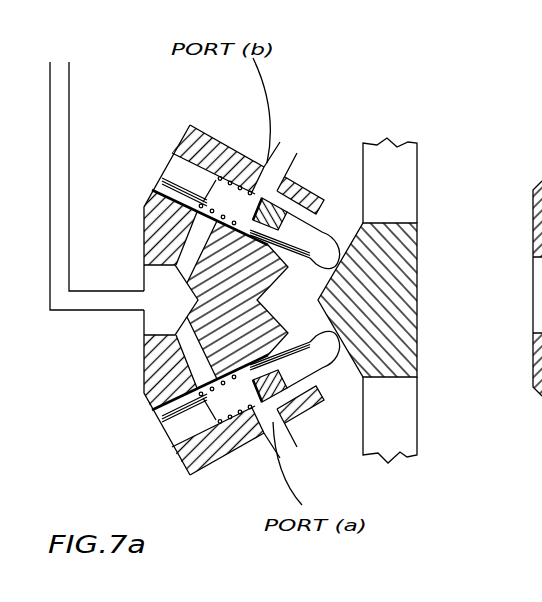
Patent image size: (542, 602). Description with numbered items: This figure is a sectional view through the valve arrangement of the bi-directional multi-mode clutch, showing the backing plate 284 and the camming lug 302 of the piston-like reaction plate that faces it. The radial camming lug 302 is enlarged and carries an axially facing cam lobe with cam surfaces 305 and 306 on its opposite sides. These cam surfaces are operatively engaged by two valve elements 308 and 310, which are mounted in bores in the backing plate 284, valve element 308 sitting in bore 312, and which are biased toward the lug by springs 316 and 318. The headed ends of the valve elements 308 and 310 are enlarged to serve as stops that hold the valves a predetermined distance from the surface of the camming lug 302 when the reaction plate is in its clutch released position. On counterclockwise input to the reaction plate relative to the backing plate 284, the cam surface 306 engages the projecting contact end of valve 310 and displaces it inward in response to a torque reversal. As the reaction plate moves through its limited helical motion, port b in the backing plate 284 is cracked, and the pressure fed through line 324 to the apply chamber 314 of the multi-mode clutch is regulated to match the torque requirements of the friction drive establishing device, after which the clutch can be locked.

The backing plate 284 is at (145, 370).
The radial camming lug 302 is at (413, 225).
The cam surface 305 is at (346, 372).
The cam surface 306 is at (346, 230).
The valve element 308 is at (315, 358).
The valve element 310 is at (318, 245).
The bore 312 is at (170, 430).
The apply chamber 314 is at (225, 193).
The spring 316 is at (204, 445).
The spring 318 is at (232, 177).
The line 324 is at (57, 118).